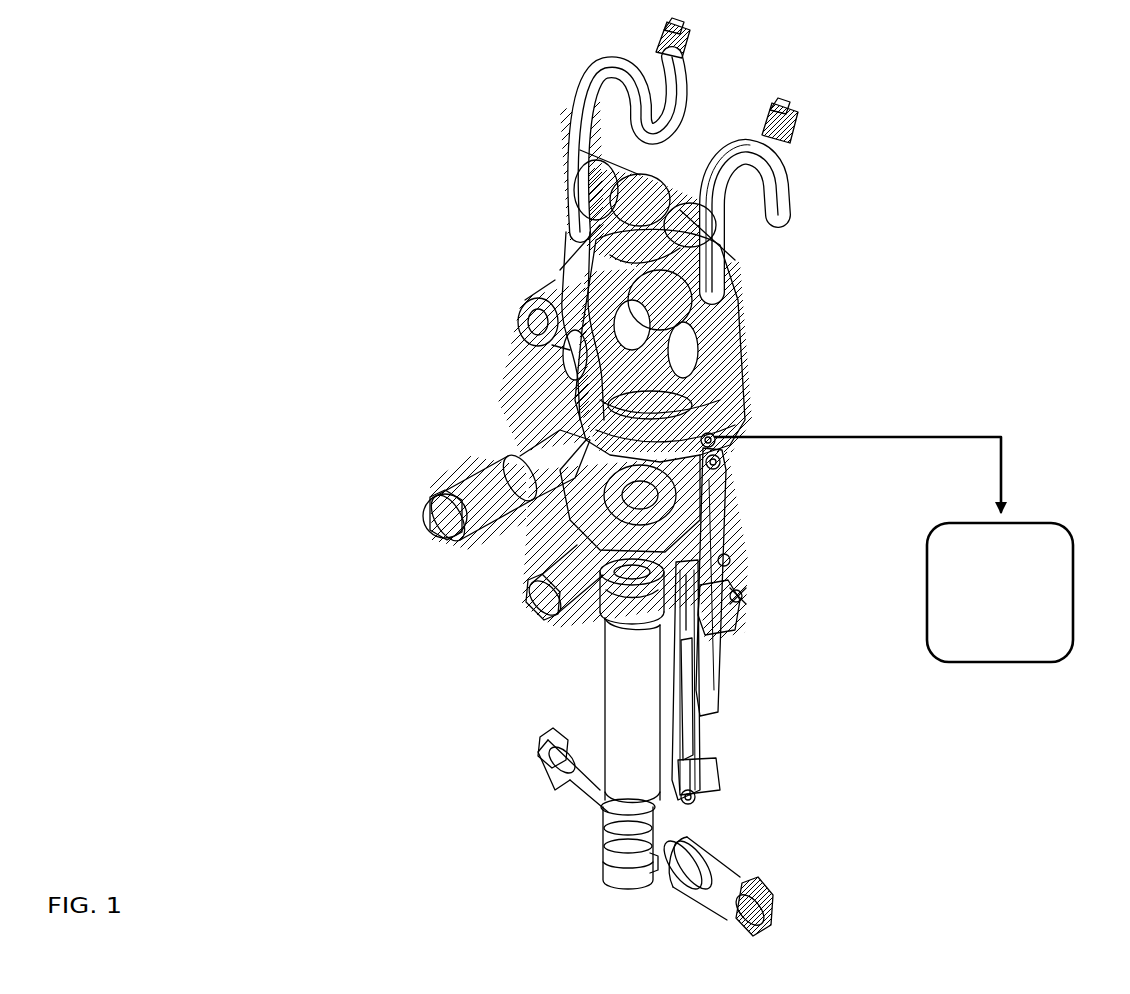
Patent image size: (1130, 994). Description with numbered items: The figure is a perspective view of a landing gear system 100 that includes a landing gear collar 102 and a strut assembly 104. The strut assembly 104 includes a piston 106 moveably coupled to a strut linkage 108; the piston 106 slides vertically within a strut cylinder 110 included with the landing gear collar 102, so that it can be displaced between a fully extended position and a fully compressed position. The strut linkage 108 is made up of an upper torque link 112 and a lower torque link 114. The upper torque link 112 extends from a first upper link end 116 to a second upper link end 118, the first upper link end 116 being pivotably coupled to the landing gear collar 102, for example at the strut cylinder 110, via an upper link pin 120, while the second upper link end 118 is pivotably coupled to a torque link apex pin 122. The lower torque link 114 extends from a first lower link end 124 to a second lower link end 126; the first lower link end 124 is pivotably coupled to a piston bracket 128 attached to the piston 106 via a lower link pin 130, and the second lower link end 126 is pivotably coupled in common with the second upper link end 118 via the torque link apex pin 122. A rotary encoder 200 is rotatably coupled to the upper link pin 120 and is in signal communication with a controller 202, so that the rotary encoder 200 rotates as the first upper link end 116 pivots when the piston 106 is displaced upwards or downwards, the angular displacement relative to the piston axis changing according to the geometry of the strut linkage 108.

The landing gear system 100 is at (478, 212).
The landing gear collar 102 is at (737, 350).
The strut assembly 104 is at (468, 775).
The piston 106 is at (630, 688).
The strut linkage 108 is at (740, 570).
The strut cylinder 110 is at (613, 610).
The upper torque link 112 is at (722, 517).
The lower torque link 114 is at (702, 707).
The first upper link end 116 is at (720, 467).
The second upper link end 118 is at (727, 558).
The upper link pin 120 is at (708, 441).
The torque link apex pin 122 is at (738, 593).
The first lower link end 124 is at (697, 773).
The second lower link end 126 is at (713, 608).
The piston bracket 128 is at (613, 832).
The lower link pin 130 is at (690, 797).
The rotary encoder 200 is at (720, 437).
The controller 202 is at (1038, 523).